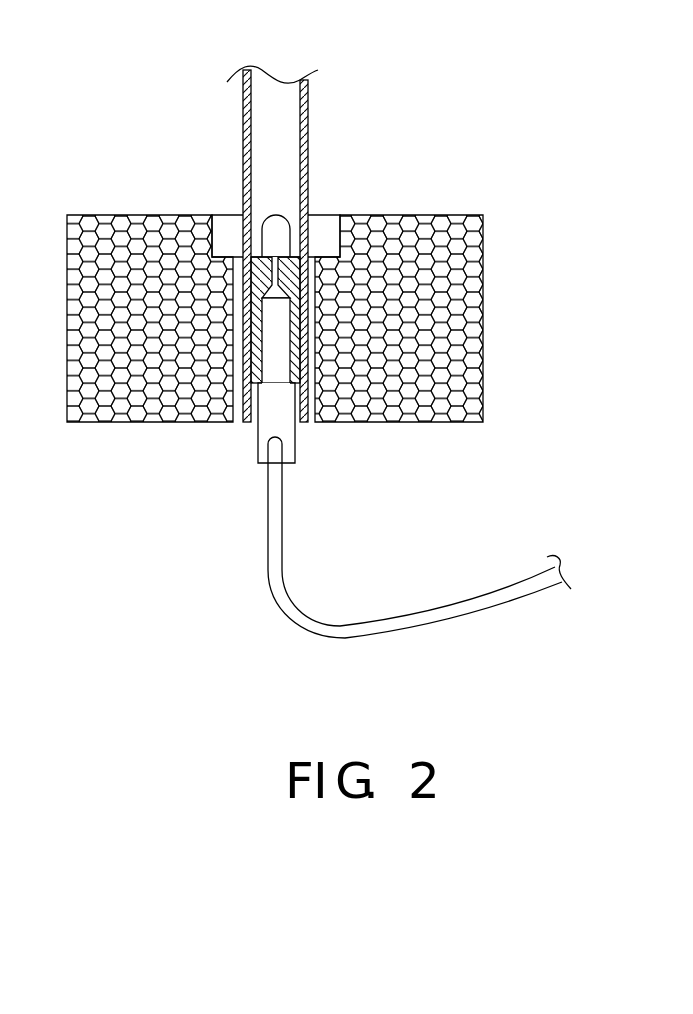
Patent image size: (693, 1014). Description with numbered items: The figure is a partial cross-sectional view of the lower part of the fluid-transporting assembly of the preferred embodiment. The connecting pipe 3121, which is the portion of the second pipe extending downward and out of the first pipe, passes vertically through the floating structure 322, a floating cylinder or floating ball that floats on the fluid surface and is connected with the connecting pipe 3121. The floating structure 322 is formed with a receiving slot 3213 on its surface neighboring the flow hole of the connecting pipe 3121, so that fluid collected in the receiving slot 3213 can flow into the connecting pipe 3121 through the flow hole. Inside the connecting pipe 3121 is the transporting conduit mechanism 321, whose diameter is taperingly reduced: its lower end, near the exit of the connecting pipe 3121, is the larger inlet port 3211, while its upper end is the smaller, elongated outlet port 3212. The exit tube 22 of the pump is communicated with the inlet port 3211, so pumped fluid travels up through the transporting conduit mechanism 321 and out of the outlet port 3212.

The exit tube 22 is at (452, 607).
The transporting conduit mechanism 321 is at (295, 368).
The floating structure 322 is at (448, 339).
The connecting pipe 3121 is at (303, 237).
The inlet port 3211 is at (275, 423).
The outlet port 3212 is at (262, 266).
The receiving slot 3213 is at (218, 247).